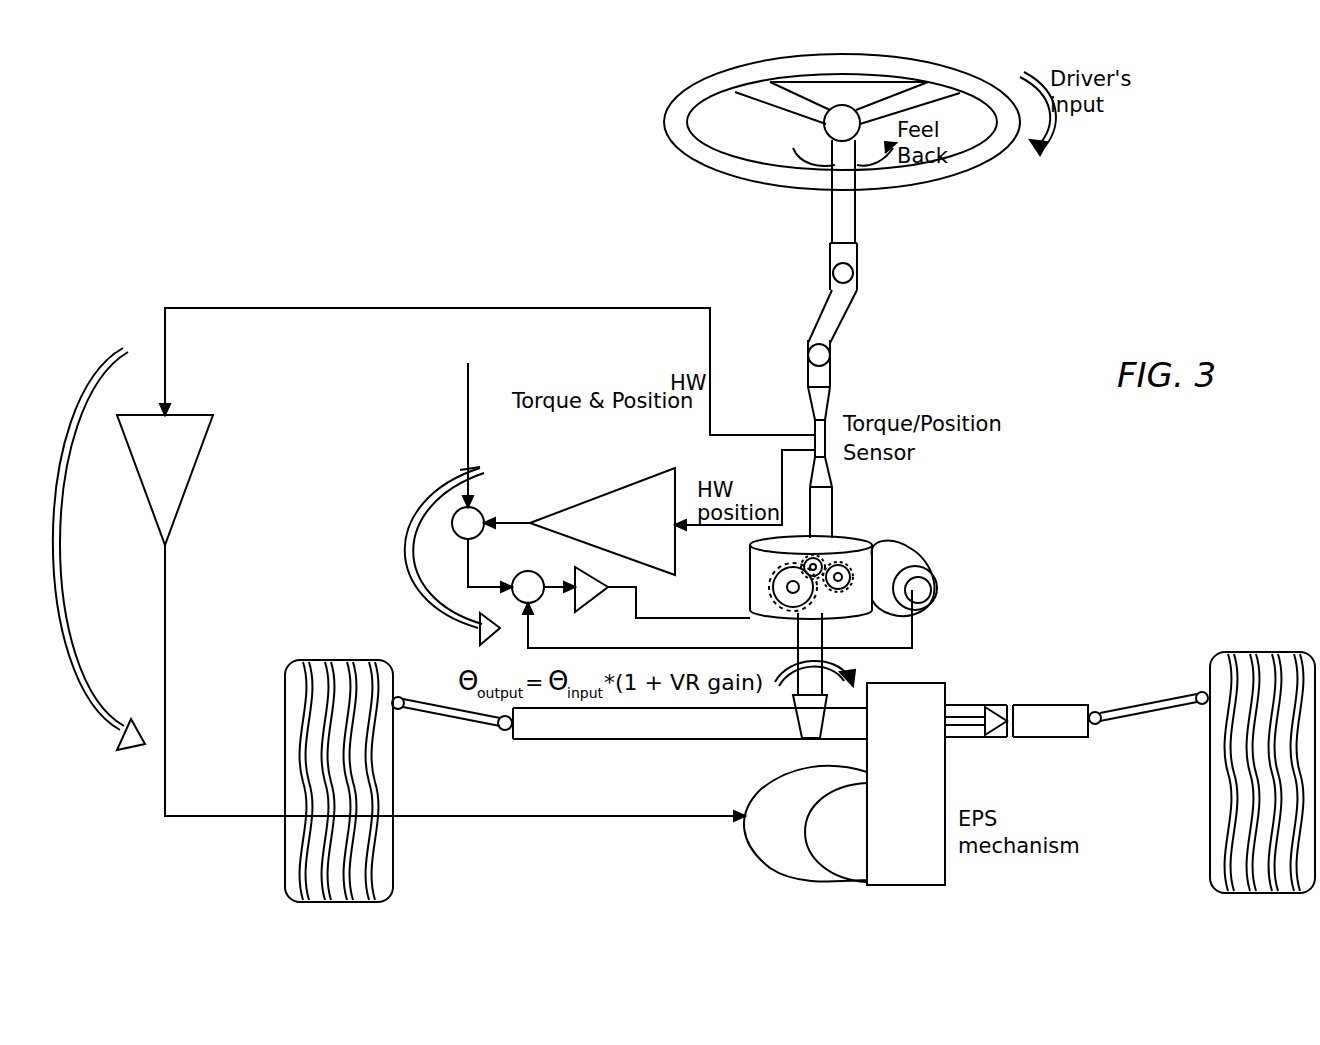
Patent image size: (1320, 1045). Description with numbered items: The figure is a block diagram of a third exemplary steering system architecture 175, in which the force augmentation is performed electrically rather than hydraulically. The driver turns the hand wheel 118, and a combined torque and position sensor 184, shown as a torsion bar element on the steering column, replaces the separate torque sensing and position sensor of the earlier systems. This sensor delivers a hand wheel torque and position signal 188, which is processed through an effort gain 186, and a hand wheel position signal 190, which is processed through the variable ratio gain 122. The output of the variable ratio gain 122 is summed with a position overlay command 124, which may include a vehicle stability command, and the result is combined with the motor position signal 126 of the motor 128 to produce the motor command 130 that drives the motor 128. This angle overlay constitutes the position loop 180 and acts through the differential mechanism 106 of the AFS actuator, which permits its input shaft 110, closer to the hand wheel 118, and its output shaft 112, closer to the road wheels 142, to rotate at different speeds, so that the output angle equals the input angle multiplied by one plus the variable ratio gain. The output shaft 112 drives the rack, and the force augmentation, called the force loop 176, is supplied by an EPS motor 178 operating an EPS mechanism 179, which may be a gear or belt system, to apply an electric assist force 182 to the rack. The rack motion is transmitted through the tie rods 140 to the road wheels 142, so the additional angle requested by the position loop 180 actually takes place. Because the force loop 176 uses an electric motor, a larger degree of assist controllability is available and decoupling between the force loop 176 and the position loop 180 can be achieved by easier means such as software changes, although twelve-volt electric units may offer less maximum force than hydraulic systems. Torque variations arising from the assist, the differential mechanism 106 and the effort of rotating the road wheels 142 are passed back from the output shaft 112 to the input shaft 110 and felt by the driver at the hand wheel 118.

The differential mechanism 106 is at (848, 540).
The input shaft 110 is at (820, 512).
The output shaft 112 is at (808, 632).
The hand wheel 118 is at (710, 72).
The variable ratio gain 122 is at (582, 500).
The position overlay command 124 is at (358, 400).
The motor position signal 126 is at (552, 625).
The motor 128 is at (930, 560).
The motor command 130 is at (710, 592).
The tie rods 140 is at (415, 700).
The road wheels 142 is at (285, 720).
The steering system architecture 175 is at (525, 268).
The force loop 176 is at (100, 820).
The EPS motor 178 is at (775, 785).
The EPS mechanism 179 is at (925, 775).
The position loop 180 is at (318, 572).
The electric assist force 182 is at (1058, 645).
The torque and position sensor 184 is at (916, 410).
The effort gain 186 is at (200, 435).
The hand wheel torque and position signal 188 is at (662, 378).
The hand wheel position signal 190 is at (745, 490).